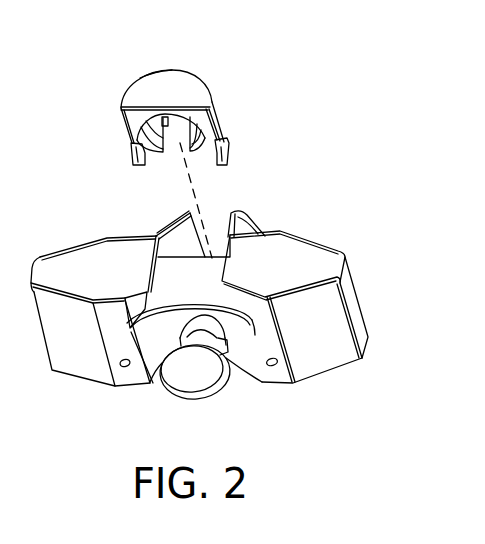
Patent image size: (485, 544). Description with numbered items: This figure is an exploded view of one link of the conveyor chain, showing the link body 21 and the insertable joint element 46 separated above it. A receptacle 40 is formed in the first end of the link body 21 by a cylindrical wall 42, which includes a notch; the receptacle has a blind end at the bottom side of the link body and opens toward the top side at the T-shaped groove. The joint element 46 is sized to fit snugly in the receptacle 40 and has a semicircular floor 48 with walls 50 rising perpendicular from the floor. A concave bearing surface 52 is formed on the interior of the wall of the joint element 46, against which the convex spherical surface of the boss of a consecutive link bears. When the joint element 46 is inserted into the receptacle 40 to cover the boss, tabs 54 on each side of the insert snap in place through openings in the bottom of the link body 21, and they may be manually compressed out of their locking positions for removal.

The link body 21 is at (78, 262).
The receptacle 40 is at (176, 252).
The cylindrical wall 42 is at (257, 223).
The joint element 46 is at (199, 77).
The semicircular floor 48 is at (152, 87).
The walls 50 is at (213, 112).
The concave bearing surface 52 is at (133, 148).
The tabs 54 is at (229, 143).